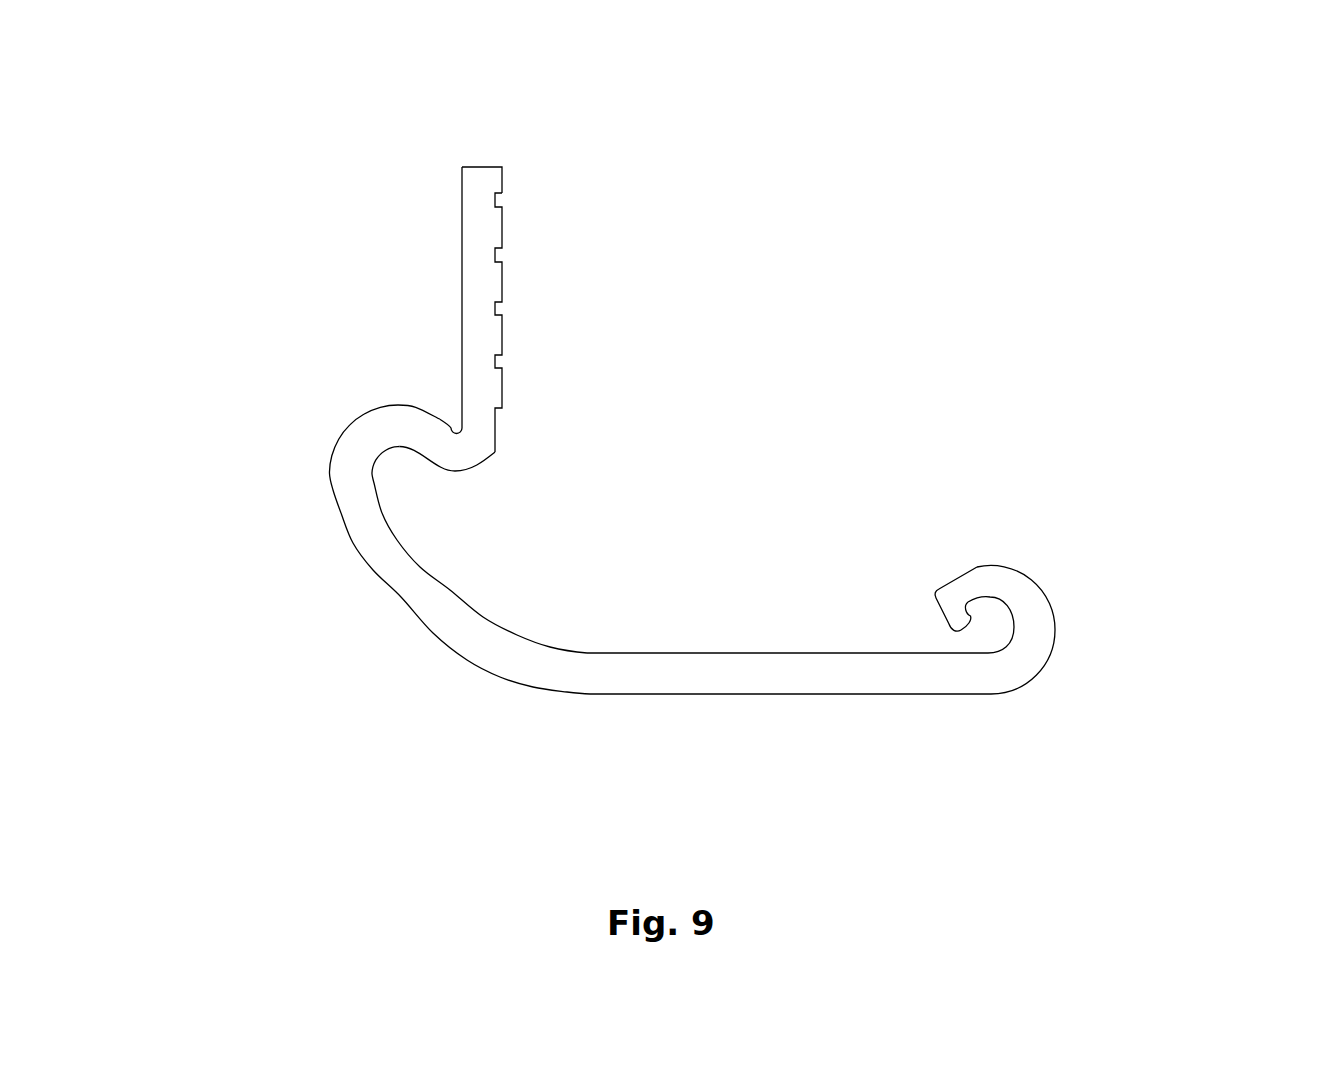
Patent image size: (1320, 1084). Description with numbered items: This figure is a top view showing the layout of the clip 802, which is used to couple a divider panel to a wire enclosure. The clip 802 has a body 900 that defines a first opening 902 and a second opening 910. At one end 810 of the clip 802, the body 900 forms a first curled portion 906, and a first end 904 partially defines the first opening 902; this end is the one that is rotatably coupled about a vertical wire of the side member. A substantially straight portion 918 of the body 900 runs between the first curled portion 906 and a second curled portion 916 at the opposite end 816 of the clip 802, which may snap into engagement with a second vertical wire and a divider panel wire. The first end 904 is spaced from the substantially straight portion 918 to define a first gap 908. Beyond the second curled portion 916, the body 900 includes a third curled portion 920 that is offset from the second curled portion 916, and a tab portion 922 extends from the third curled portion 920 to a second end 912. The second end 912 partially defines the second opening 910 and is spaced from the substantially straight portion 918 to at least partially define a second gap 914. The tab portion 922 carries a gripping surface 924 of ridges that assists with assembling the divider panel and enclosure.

The clip 802 is at (884, 205).
The one end 810 is at (1106, 602).
The opposite end 816 is at (290, 640).
The body 900 is at (728, 695).
The first opening 902 is at (998, 605).
The first end 904 is at (955, 628).
The first curled portion 906 is at (1052, 686).
The first gap 908 is at (961, 650).
The second opening 910 is at (384, 484).
The second end 912 is at (483, 167).
The second gap 914 is at (475, 521).
The second curled portion 916 is at (323, 422).
The substantially straight portion 918 is at (866, 695).
The third curled portion 920 is at (448, 409).
The tab portion 922 is at (462, 224).
The gripping surface 924 is at (521, 307).